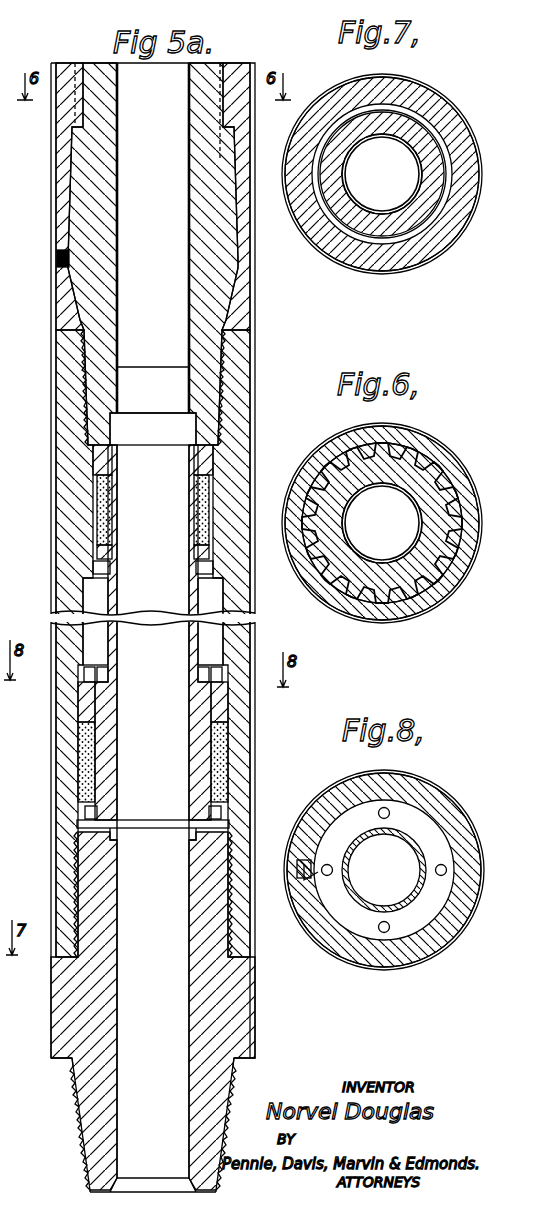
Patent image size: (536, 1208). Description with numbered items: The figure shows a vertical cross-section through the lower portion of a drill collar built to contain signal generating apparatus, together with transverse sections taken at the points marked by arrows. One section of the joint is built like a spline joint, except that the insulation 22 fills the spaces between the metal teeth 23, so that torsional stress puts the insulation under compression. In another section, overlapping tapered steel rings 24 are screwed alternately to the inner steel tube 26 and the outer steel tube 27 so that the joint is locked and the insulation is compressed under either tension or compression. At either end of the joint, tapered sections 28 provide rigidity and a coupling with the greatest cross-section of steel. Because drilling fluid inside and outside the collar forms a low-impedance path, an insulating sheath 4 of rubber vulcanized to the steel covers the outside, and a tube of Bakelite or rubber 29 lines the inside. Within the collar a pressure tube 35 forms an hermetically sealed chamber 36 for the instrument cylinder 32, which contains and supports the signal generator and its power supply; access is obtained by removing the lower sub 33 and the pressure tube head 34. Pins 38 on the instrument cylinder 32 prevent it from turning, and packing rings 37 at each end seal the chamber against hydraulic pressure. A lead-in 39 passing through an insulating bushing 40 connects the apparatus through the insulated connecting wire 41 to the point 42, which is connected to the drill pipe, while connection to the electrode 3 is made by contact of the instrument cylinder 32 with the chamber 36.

In FIG. 5A, the electrode 3 is at (52, 1008).
In FIG. 5A, the insulating sheath 4 is at (55, 136).
In FIG. 7, the insulating sheath 4 is at (436, 256).
In FIG. 6, the insulating sheath 4 is at (452, 470).
In FIG. 8, the insulating sheath 4 is at (448, 792).
In FIG. 5A, the insulation 22 is at (232, 104).
In FIG. 6, the insulation 22 is at (318, 462).
In FIG. 6, the metal teeth 23 is at (395, 602).
In FIG. 7, the steel rings 24 is at (383, 212).
In FIG. 7, the inner steel tube 26 is at (338, 133).
In FIG. 7, the outer steel tube 27 is at (343, 97).
In FIG. 5A, the tapered sections 28 is at (72, 176).
In FIG. 5A, the tube of Bakelite or rubber 29 is at (190, 242).
In FIG. 7, the tube of Bakelite or rubber 29 is at (350, 192).
In FIG. 6, the tube of Bakelite or rubber 29 is at (366, 565).
In FIG. 5A, the instrument cylinder 32 is at (82, 600).
In FIG. 5A, the lower sub 33 is at (250, 994).
In FIG. 5A, the pressure tube head 34 is at (118, 800).
In FIG. 5A, the pressure tube 35 is at (118, 741).
In FIG. 8, the pressure tube 35 is at (355, 860).
In FIG. 5A, the hermetically sealed chamber 36 is at (206, 598).
In FIG. 5A, the packing rings 37 is at (112, 506).
In FIG. 5A, the pins 38 is at (198, 570).
In FIG. 5A, the lead-in 39 is at (62, 681).
In FIG. 8, the lead-in 39 is at (298, 868).
In FIG. 5A, the insulating bushing 40 is at (84, 662).
In FIG. 8, the insulating bushing 40 is at (300, 854).
In FIG. 5A, the insulated connecting wire 41 is at (56, 462).
In FIG. 5A, the point 42 is at (56, 246).